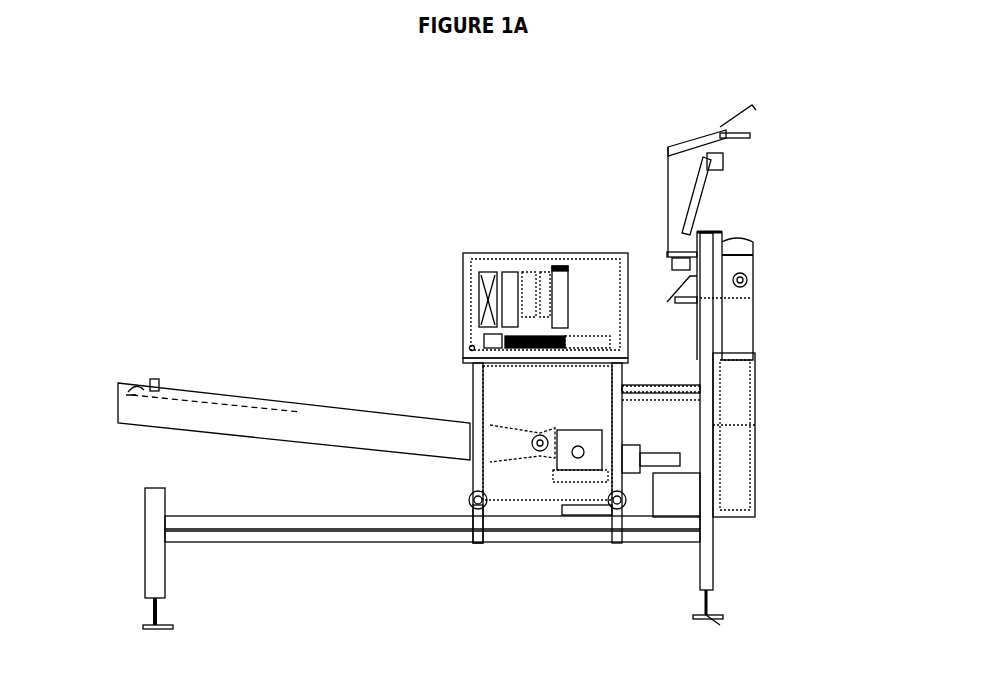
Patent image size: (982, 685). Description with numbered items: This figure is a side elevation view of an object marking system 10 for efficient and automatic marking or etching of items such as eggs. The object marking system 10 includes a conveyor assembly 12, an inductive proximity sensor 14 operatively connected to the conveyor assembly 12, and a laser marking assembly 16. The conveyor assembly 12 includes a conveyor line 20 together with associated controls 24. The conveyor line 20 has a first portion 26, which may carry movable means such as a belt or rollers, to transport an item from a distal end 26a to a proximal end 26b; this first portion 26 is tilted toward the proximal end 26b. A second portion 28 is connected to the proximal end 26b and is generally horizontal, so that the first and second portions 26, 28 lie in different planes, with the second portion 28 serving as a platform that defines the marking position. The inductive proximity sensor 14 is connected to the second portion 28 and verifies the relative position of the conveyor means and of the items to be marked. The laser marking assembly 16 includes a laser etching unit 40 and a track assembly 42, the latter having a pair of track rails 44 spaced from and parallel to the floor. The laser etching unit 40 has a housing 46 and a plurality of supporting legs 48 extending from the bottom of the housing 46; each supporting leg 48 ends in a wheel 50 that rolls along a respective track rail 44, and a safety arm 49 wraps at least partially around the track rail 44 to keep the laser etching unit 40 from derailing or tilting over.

The object marking system 10 is at (340, 218).
The conveyor assembly 12 is at (366, 534).
The inductive proximity sensor 14 is at (592, 526).
The laser marking assembly 16 is at (515, 275).
The conveyor line 20 is at (363, 373).
The controls 24 is at (730, 311).
The first portion 26 is at (276, 402).
The distal end 26a is at (120, 356).
The proximal end 26b is at (522, 425).
The second portion 28 is at (583, 429).
The laser etching unit 40 is at (586, 219).
The track assembly 42 is at (184, 558).
The track rails 44 is at (432, 569).
The housing 46 is at (455, 235).
The supporting legs 48 is at (539, 450).
The safety arm 49 is at (497, 563).
The wheel 50 is at (488, 506).